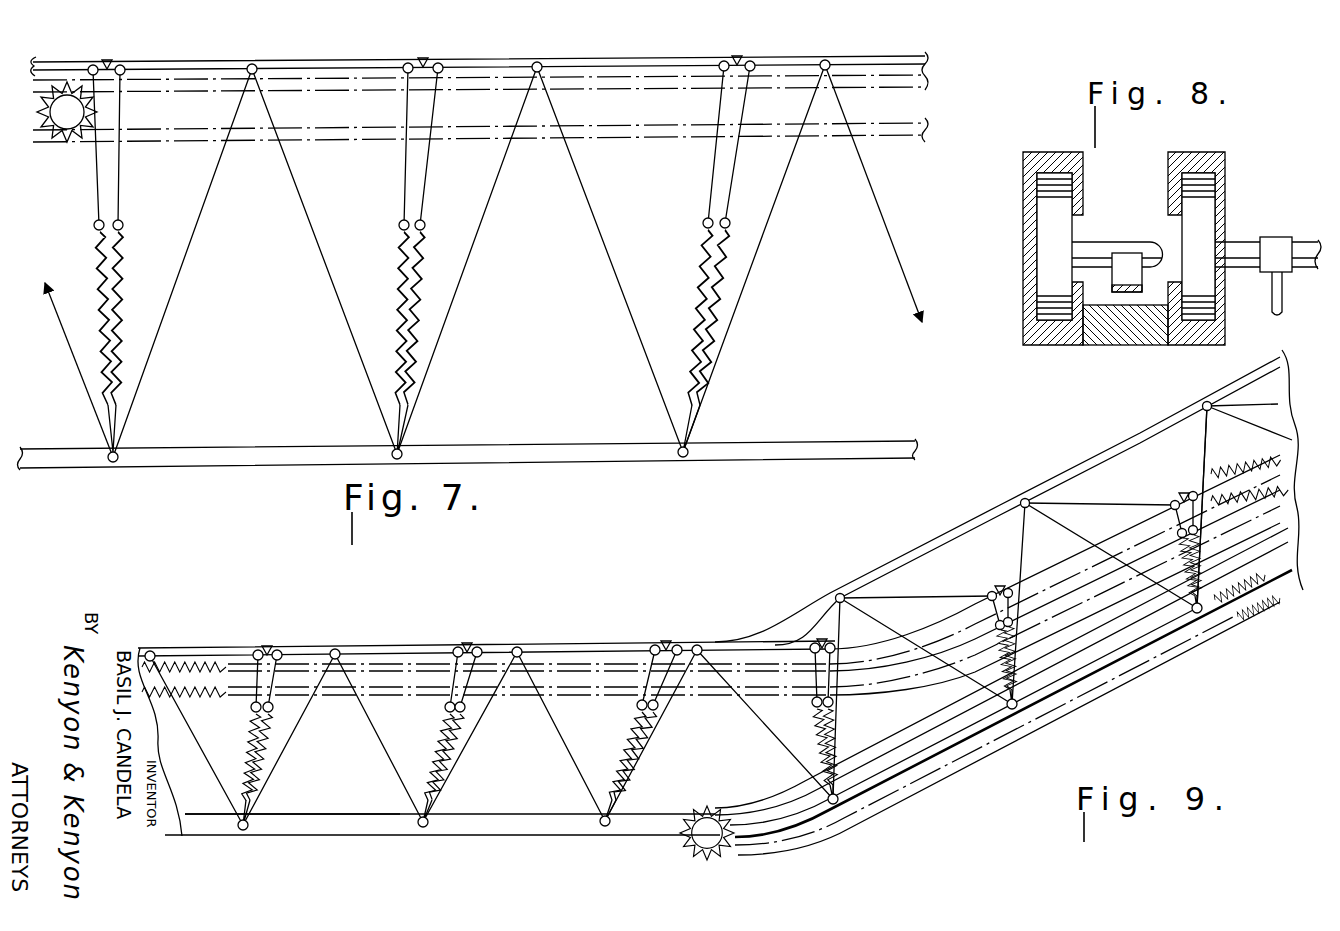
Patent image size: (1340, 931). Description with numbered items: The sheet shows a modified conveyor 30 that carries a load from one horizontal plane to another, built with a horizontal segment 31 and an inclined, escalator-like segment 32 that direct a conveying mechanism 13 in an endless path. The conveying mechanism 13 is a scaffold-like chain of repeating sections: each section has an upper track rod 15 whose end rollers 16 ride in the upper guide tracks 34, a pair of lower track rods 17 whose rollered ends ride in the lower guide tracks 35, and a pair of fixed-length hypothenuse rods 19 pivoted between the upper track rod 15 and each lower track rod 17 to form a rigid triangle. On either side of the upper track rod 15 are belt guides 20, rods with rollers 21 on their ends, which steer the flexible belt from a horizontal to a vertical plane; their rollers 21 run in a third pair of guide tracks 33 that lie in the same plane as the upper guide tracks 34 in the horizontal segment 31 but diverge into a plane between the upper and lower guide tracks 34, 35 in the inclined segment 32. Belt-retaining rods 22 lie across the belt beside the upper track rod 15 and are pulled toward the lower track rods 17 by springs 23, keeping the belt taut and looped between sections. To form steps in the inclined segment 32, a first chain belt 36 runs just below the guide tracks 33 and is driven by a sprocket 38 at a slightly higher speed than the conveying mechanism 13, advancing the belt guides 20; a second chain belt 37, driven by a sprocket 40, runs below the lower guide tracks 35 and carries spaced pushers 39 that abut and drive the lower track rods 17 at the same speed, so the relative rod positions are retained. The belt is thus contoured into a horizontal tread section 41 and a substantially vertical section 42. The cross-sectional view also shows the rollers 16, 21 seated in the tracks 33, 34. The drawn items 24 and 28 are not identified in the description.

In FIG. 7, the conveying mechanism 13 is at (906, 254).
In FIG. 9, the conveying mechanism 13 is at (412, 836).
In FIG. 7, the upper track rod 15 is at (255, 64).
In FIG. 8, the upper track rod 15 is at (1303, 248).
In FIG. 9, the upper track rod 15 is at (338, 650).
In FIG. 8, the rollers 16 is at (1208, 235).
In FIG. 7, the lower track rod 17 is at (683, 460).
In FIG. 9, the lower track rod 17 is at (245, 830).
In FIG. 7, the hypothenuse rod 19 is at (290, 186).
In FIG. 8, the hypothenuse rod 19 is at (1283, 302).
In FIG. 9, the hypothenuse rod 19 is at (360, 712).
In FIG. 7, the belt guide 20 is at (91, 65).
In FIG. 8, the belt guide 20 is at (1105, 245).
In FIG. 9, the belt guide 20 is at (256, 650).
In FIG. 8, the rollers 21 is at (1065, 230).
In FIG. 7, the belt-retaining rod 22 is at (93, 228).
In FIG. 9, the belt-retaining rod 22 is at (492, 722).
In FIG. 7, the spring 23 is at (115, 320).
In FIG. 9, the spring 23 is at (250, 745).
In FIG. 7, the cable anchor 24 is at (110, 60).
In FIG. 9, the cable anchor 24 is at (268, 646).
In FIG. 7, the tension cable 28 is at (117, 186).
In FIG. 9, the tension cable 28 is at (597, 650).
In FIG. 7, the conveyor 30 is at (942, 93).
In FIG. 9, the conveyor 30 is at (728, 592).
In FIG. 9, the horizontal segment 31 is at (445, 618).
In FIG. 9, the inclined segment 32 is at (996, 492).
In FIG. 7, the third pair of guide tracks 33 is at (346, 62).
In FIG. 8, the third pair of guide tracks 33 is at (1040, 155).
In FIG. 9, the third pair of guide tracks 33 is at (922, 634).
In FIG. 8, the upper guide tracks 34 is at (1210, 152).
In FIG. 9, the upper guide tracks 34 is at (897, 566).
In FIG. 7, the lower guide tracks 35 is at (548, 448).
In FIG. 9, the lower guide tracks 35 is at (324, 837).
In FIG. 7, the chain belt 36 is at (332, 140).
In FIG. 8, the chain belt 36 is at (1128, 298).
In FIG. 9, the chain belt 36 is at (200, 698).
In FIG. 8, the second chain belt 37 is at (1120, 278).
In FIG. 9, the second chain belt 37 is at (766, 845).
In FIG. 7, the sprocket 38 is at (60, 150).
In FIG. 9, the pushers 39 is at (822, 798).
In FIG. 9, the sprocket 40 is at (700, 848).
In FIG. 9, the horizontal tread section 41 is at (955, 595).
In FIG. 9, the vertical section 42 is at (1200, 458).